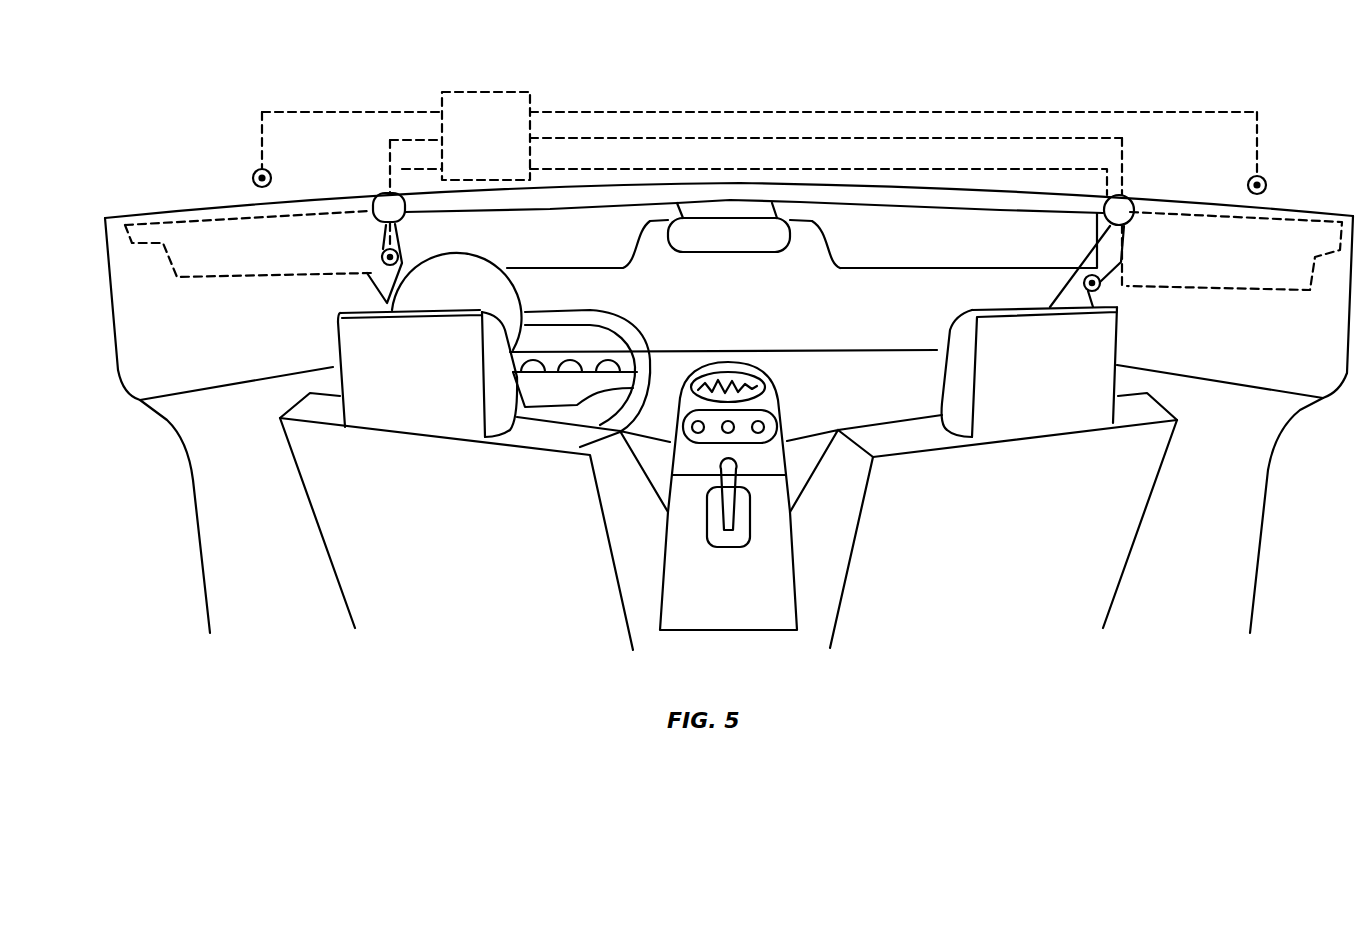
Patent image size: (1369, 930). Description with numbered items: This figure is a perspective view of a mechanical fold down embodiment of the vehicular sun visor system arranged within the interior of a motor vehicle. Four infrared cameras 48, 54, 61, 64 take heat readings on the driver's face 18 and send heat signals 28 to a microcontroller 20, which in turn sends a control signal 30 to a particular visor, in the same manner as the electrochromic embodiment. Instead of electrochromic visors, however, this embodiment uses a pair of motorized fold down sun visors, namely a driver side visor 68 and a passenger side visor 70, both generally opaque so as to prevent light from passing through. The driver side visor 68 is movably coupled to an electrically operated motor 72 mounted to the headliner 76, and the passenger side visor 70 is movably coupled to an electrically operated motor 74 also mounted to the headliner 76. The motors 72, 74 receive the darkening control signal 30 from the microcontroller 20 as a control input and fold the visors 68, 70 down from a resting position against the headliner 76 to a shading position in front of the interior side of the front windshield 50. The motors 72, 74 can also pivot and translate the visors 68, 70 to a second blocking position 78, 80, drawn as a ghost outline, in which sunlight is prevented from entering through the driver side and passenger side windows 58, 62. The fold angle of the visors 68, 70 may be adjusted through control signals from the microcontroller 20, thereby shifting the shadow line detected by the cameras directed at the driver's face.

The driver's face 18 is at (523, 295).
The microcontroller 20 is at (502, 107).
The heat signals 28 is at (327, 110).
The control signal 30 is at (405, 176).
The driver side front windshield camera 48 is at (383, 266).
The front windshield 50 is at (917, 340).
The infrared camera 54 is at (1100, 287).
The driver side window 58 is at (195, 375).
The infrared camera 61 is at (253, 178).
The passenger side window 62 is at (1288, 380).
The infrared camera 64 is at (1267, 183).
The driver side visor 68 is at (600, 257).
The passenger side visor 70 is at (855, 260).
The electrically operated motor 72 is at (377, 212).
The electrically operated motor 74 is at (1135, 212).
The headliner 76 is at (783, 197).
The second blocking position 78 is at (213, 263).
The second blocking position 80 is at (1215, 280).